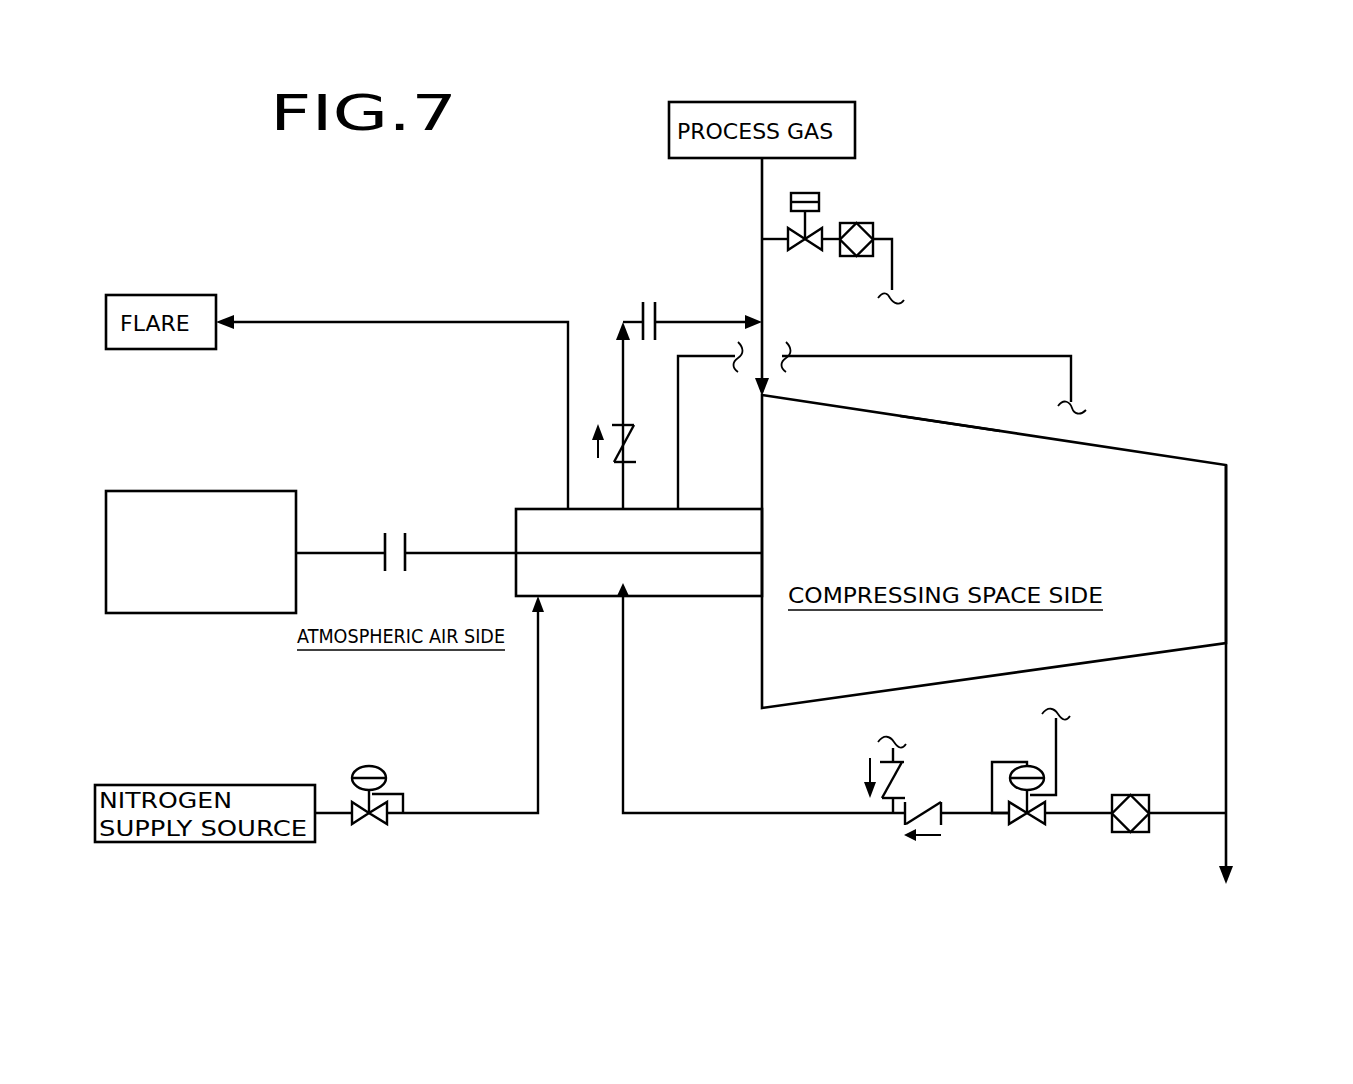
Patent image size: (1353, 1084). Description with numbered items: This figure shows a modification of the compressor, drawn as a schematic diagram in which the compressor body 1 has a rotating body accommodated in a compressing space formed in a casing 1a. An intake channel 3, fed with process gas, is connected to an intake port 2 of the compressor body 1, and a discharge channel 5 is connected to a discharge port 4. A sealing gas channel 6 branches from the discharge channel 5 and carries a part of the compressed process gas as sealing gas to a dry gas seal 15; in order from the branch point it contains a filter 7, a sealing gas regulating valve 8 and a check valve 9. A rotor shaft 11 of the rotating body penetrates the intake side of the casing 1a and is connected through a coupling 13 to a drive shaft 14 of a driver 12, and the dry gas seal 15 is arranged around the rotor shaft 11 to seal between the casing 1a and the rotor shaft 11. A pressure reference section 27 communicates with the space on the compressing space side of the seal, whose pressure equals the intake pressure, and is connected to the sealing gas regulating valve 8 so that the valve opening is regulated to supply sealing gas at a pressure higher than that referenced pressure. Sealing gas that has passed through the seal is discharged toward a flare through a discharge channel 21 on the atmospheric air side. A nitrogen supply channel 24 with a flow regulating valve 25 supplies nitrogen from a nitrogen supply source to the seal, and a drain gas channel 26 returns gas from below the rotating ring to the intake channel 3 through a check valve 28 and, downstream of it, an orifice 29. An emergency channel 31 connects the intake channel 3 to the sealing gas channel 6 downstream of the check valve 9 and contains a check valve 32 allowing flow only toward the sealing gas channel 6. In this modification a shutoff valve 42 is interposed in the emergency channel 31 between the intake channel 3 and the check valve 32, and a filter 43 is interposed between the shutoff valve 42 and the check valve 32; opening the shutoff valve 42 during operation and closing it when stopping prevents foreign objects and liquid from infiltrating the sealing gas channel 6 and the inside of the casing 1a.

The compressor body 1 is at (1172, 452).
The casing 1a is at (978, 432).
The intake port 2 is at (762, 395).
The intake channel 3 is at (760, 187).
The discharge port 4 is at (1228, 643).
The discharge channel 5 is at (1228, 752).
The sealing gas channel 6 is at (1180, 814).
The filter 7 is at (1126, 832).
The sealing gas regulating valve 8 is at (1028, 826).
The check valve 9 is at (942, 826).
The rotor shaft 11 is at (462, 552).
The driver 12 is at (196, 491).
The coupling 13 is at (395, 533).
The drive shaft 14 is at (346, 552).
The dry gas seal 15 is at (690, 596).
The discharge channel 21 is at (417, 322).
The nitrogen supply channel 24 is at (469, 814).
The flow regulating valve 25 is at (365, 826).
The drain gas channel 26 is at (622, 392).
The pressure reference section 27 is at (678, 494).
The check valve 28 is at (626, 425).
The orifice 29 is at (648, 304).
The emergency channel 31 is at (896, 287).
The check valve 32 is at (903, 768).
The shutoff valve 42 is at (818, 202).
The filter 43 is at (873, 224).